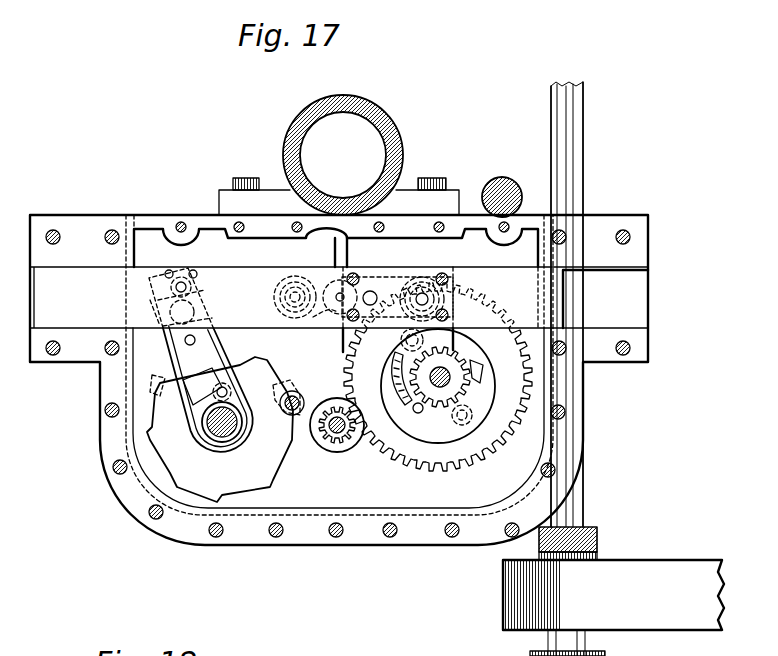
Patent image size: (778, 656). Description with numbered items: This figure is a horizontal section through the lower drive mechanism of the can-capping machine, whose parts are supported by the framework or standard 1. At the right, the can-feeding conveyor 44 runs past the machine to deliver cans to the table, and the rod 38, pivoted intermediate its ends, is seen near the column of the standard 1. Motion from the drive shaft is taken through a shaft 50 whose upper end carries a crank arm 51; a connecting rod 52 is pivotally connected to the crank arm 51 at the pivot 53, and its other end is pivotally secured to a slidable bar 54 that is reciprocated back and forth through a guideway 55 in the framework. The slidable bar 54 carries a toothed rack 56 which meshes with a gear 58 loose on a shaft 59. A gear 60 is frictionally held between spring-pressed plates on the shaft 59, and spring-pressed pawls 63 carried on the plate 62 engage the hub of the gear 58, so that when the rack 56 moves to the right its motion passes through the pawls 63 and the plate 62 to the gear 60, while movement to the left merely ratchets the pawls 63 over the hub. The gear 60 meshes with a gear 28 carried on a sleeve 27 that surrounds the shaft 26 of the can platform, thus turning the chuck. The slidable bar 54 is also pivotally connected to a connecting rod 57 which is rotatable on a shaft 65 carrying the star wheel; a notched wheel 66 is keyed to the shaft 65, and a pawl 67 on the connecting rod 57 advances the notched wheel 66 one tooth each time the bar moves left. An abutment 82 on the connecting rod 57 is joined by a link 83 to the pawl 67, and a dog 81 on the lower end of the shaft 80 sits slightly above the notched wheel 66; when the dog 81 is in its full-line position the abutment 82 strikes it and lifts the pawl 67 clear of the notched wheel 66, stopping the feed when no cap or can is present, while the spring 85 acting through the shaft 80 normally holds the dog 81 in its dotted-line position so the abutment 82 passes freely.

The framework or standard 1 is at (386, 126).
The rod 38 is at (500, 178).
The guideway 55 is at (591, 272).
The pivotal connection 53 is at (276, 270).
The crank arm 51 is at (320, 270).
The shaft 50 is at (390, 270).
The connecting rod 52 is at (392, 277).
The slidable bar 54 is at (505, 277).
The spring 85 is at (198, 306).
The connecting rod 57 is at (157, 340).
The pawl 67 is at (160, 372).
The link 83 is at (218, 342).
The abutment 82 is at (240, 365).
The shaft 80 is at (294, 397).
The dog 81 is at (302, 404).
The toothed rack 56 is at (343, 340).
The spring-pressed pawls 63 is at (410, 362).
The shaft 59 is at (447, 372).
The gear 58 is at (422, 410).
The spring-pressed plate 62 is at (400, 422).
The gear 60 is at (452, 460).
The shaft 65 is at (231, 440).
The notched wheel 66 is at (260, 473).
The sleeve 27 is at (330, 438).
The gear 28 is at (335, 446).
The shaft 26 is at (343, 452).
The can-feeding conveyor 44 is at (658, 570).